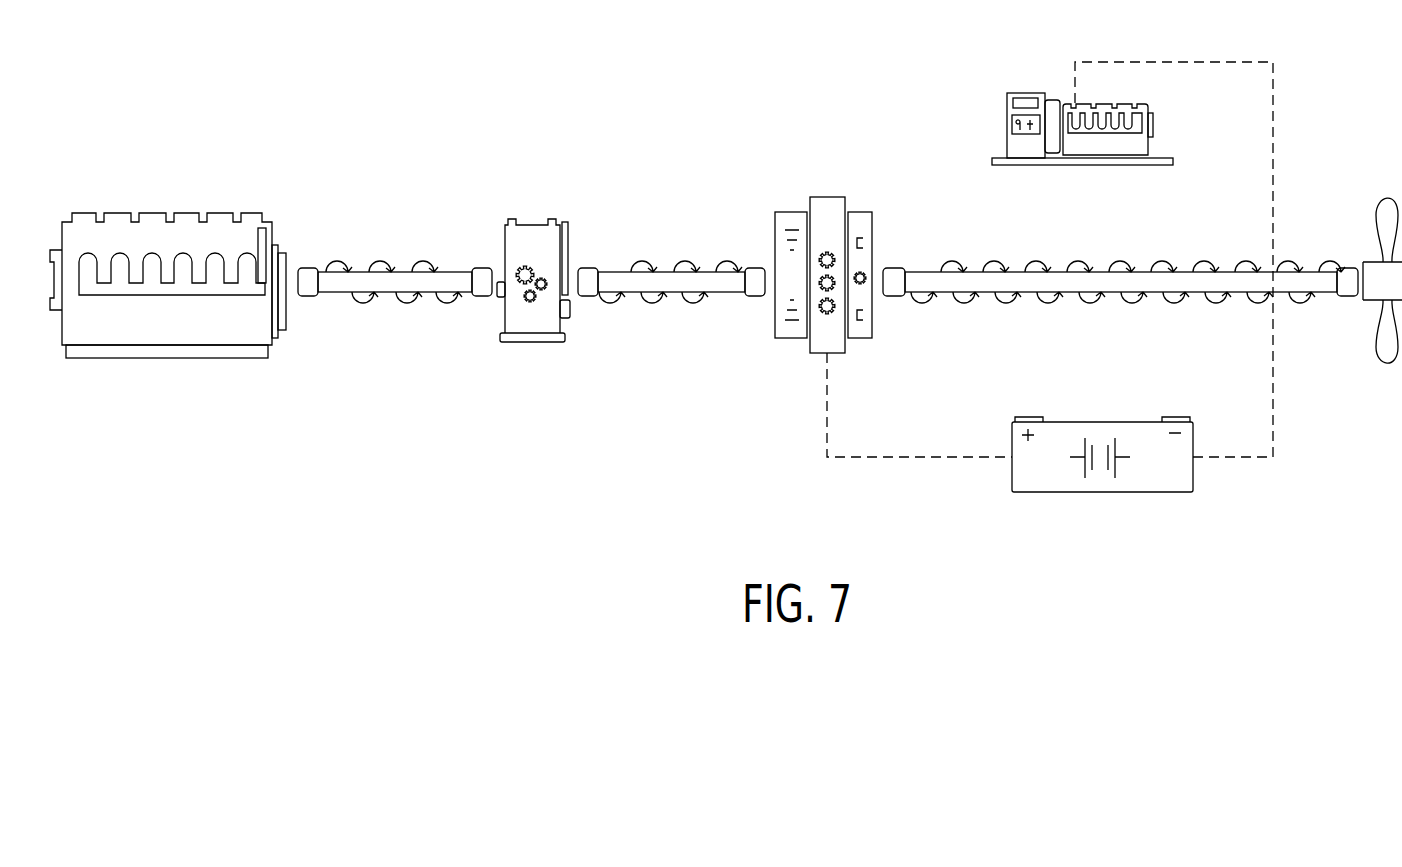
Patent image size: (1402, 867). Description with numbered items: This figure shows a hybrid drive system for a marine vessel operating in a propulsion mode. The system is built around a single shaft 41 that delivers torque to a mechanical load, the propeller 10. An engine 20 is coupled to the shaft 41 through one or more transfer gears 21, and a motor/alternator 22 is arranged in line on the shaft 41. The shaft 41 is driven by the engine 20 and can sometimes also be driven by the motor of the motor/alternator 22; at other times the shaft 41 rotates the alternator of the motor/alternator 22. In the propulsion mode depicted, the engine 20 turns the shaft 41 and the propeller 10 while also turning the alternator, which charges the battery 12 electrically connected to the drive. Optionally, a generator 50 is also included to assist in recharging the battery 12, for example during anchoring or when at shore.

The propeller 10 is at (1384, 210).
The battery 12 is at (1100, 422).
The engine 20 is at (163, 240).
The transfer gears 21 is at (533, 240).
The motor/alternator 22 is at (828, 220).
The shaft 41 is at (371, 283).
The generator 50 is at (1025, 93).